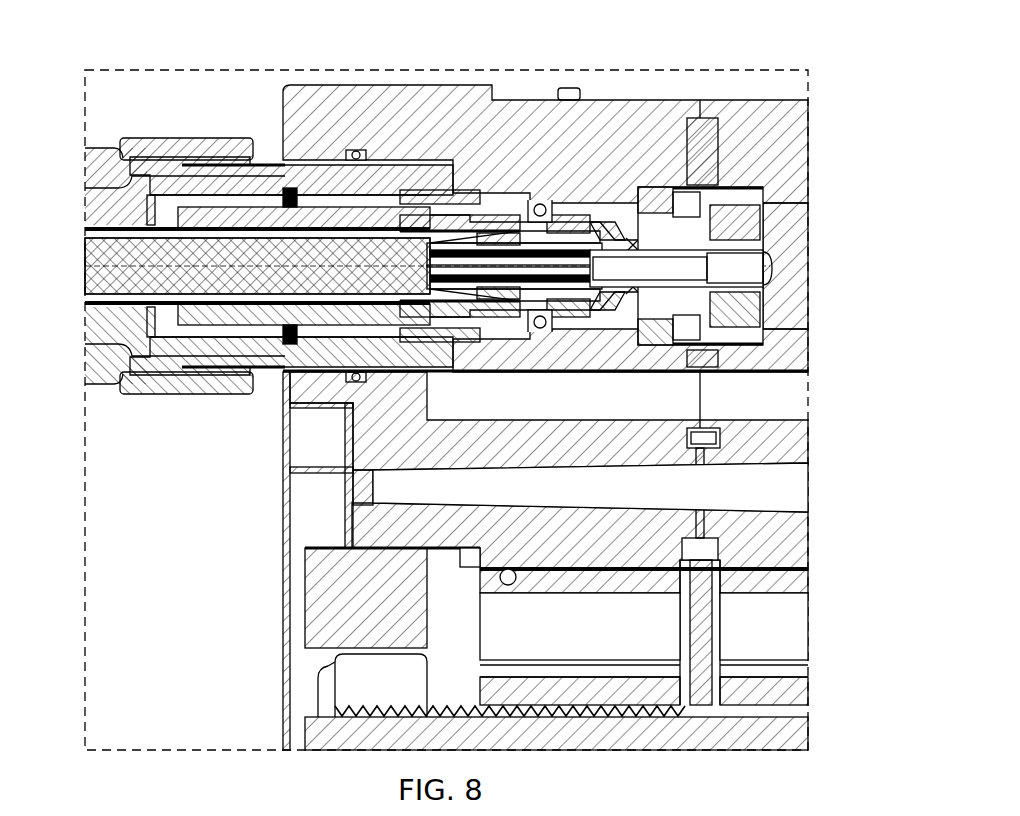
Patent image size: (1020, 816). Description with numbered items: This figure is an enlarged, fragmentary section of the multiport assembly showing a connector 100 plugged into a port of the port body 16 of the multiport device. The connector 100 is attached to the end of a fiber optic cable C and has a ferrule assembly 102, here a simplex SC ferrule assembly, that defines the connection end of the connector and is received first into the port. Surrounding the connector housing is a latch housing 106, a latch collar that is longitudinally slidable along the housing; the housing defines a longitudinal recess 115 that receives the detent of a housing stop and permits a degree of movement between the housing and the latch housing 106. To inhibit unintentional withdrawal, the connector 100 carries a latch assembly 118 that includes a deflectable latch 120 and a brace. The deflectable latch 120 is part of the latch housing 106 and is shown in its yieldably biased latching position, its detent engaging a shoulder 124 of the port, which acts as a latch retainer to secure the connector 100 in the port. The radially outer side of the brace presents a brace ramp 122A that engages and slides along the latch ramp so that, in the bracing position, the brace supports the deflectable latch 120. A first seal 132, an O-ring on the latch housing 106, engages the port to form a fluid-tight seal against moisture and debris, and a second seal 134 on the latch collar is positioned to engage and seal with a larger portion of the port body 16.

The connector 100 is at (116, 86).
The port body 16 is at (650, 86).
The fiber optic cable C is at (105, 271).
The ferrule assembly 102 is at (726, 268).
The latch housing 106 is at (268, 388).
The longitudinal recess 115 is at (398, 342).
The latch assembly 118 is at (452, 390).
The deflectable latch 120 is at (405, 355).
The brace ramp 122A is at (425, 360).
The shoulder 124 is at (430, 400).
The first seal 132 is at (541, 203).
The second seal 134 is at (347, 150).